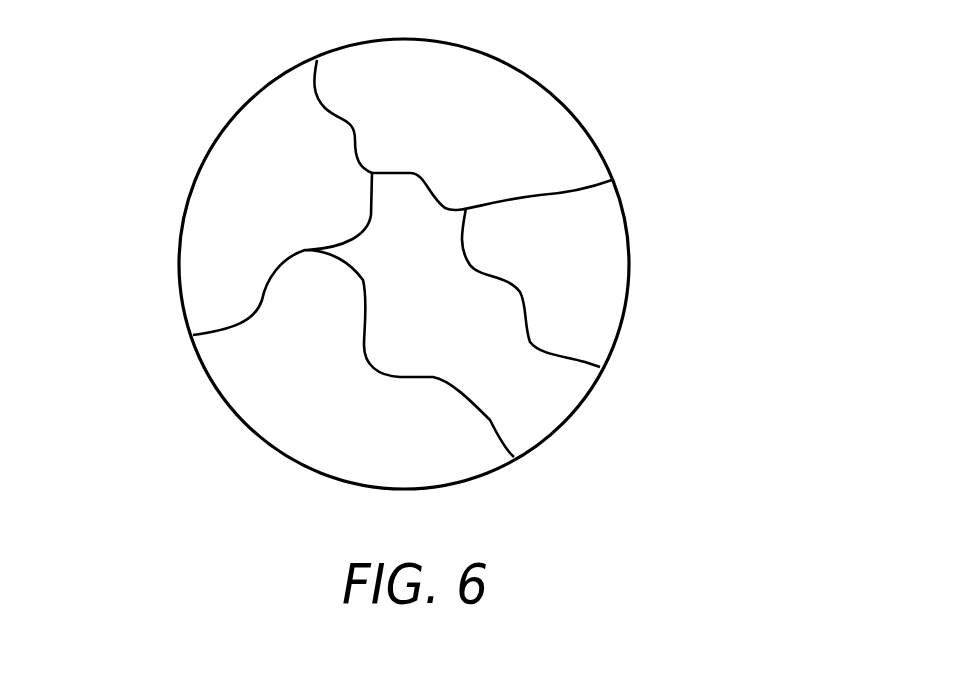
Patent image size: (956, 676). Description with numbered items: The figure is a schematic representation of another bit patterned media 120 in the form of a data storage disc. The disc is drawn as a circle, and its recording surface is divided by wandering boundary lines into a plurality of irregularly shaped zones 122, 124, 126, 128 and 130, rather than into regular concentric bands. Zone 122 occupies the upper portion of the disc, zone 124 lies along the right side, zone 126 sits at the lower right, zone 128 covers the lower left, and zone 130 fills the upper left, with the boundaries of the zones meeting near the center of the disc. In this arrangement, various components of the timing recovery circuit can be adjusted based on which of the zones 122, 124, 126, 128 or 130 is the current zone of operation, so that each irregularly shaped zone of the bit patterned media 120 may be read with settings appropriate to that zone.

The bit patterned media 120 is at (471, 264).
The irregularly shaped zone 122 is at (490, 88).
The irregularly shaped zone 124 is at (600, 272).
The irregularly shaped zone 126 is at (552, 402).
The irregularly shaped zone 128 is at (310, 427).
The irregularly shaped zone 130 is at (215, 185).